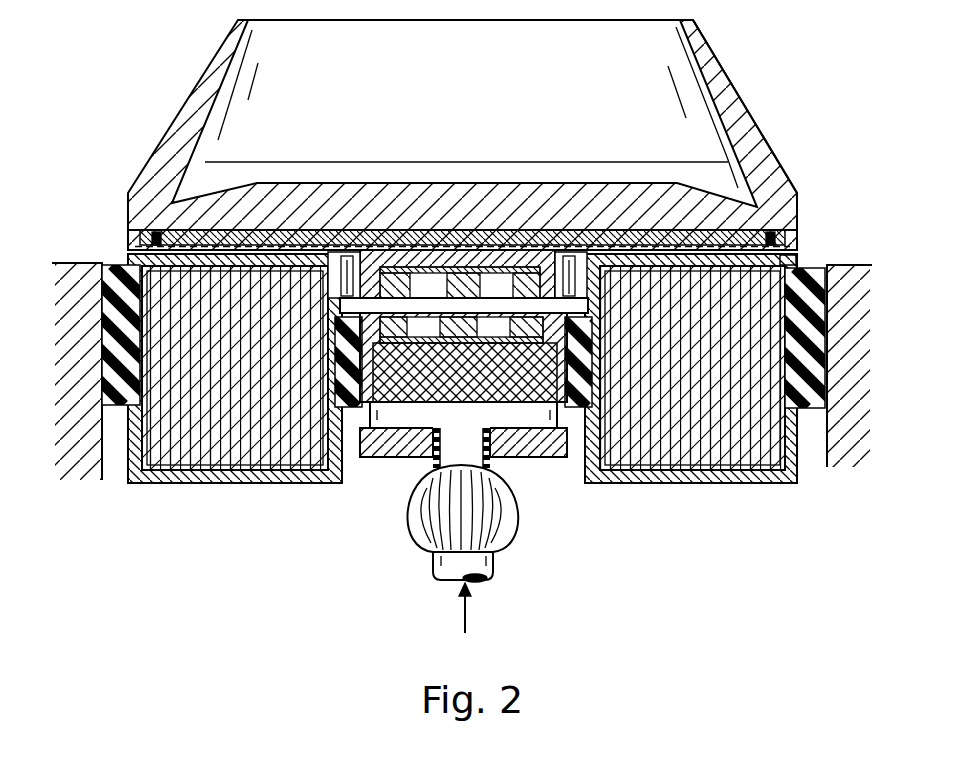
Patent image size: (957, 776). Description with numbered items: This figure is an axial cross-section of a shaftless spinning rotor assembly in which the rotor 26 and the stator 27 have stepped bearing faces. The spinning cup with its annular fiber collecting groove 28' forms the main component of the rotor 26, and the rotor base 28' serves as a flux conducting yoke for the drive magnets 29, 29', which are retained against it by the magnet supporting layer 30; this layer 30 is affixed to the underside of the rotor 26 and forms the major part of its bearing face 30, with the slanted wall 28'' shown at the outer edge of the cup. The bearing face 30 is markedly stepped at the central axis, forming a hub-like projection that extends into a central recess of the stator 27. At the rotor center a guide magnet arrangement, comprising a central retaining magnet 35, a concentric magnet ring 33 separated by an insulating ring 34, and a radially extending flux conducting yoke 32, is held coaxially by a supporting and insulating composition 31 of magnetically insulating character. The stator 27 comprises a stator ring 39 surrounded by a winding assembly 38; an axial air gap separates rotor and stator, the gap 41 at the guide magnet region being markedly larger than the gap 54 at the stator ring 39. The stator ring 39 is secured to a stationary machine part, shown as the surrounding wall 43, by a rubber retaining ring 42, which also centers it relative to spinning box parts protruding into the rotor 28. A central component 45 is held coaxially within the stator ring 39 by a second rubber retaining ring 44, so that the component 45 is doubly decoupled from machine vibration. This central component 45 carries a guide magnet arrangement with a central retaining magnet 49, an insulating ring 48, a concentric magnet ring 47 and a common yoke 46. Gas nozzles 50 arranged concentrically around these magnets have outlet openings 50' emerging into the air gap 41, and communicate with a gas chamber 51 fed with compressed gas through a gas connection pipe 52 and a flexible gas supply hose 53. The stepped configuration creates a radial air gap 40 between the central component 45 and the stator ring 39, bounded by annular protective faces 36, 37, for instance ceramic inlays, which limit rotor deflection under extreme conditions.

The spinning rotor 26 is at (770, 95).
The stator 27 is at (803, 493).
The rotor 28 is at (462, 135).
The annular fiber collecting groove / rotor base 28' is at (462, 171).
The slanted bezel wall 28'' is at (762, 106).
The drive magnet 29 is at (483, 195).
The drive magnet 29' is at (429, 196).
The bearing face / magnet supporting layer 30 is at (795, 247).
The supporting and insulating composition 31 is at (455, 300).
The flux conducting yoke 32 is at (416, 262).
The magnet ring 33 is at (392, 262).
The insulating ring 34 is at (446, 265).
The central retaining magnet 35 is at (497, 300).
The protective face 36 is at (356, 257).
The protective face 37 is at (340, 253).
The winding assembly 38 is at (758, 477).
The stator ring 39 is at (697, 465).
The radial air gap 40 is at (595, 250).
The air gap 41 is at (567, 300).
The rubber retaining ring 42 is at (108, 405).
The support wall 43 is at (88, 437).
The rubber retaining ring 44 is at (350, 385).
The central component 45 is at (553, 470).
The common yoke 46 is at (441, 332).
The magnet ring 47 is at (388, 345).
The insulating ring 48 is at (472, 335).
The central retaining magnet 49 is at (508, 345).
The gas nozzle 50 is at (590, 422).
The outlet opening 50' is at (597, 206).
The gas chamber 51 is at (528, 430).
The gas connection pipe 52 is at (432, 460).
The flexible gas supply hose 53 is at (494, 552).
The air gap 54 is at (782, 258).